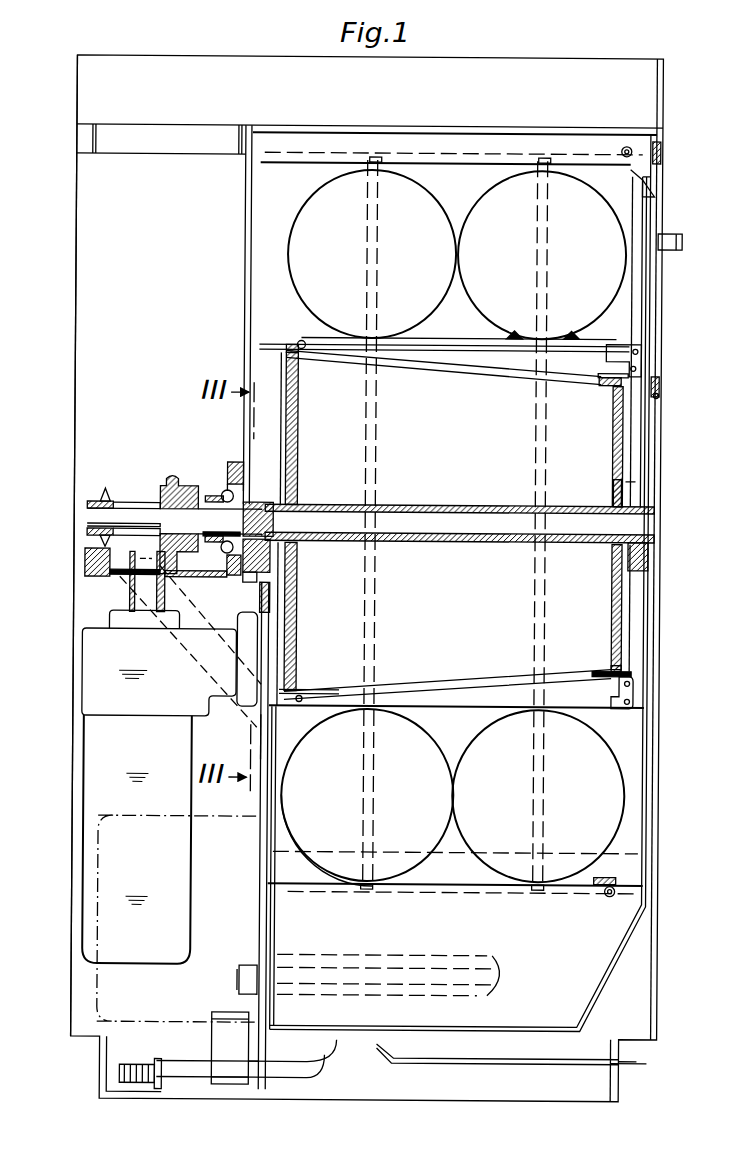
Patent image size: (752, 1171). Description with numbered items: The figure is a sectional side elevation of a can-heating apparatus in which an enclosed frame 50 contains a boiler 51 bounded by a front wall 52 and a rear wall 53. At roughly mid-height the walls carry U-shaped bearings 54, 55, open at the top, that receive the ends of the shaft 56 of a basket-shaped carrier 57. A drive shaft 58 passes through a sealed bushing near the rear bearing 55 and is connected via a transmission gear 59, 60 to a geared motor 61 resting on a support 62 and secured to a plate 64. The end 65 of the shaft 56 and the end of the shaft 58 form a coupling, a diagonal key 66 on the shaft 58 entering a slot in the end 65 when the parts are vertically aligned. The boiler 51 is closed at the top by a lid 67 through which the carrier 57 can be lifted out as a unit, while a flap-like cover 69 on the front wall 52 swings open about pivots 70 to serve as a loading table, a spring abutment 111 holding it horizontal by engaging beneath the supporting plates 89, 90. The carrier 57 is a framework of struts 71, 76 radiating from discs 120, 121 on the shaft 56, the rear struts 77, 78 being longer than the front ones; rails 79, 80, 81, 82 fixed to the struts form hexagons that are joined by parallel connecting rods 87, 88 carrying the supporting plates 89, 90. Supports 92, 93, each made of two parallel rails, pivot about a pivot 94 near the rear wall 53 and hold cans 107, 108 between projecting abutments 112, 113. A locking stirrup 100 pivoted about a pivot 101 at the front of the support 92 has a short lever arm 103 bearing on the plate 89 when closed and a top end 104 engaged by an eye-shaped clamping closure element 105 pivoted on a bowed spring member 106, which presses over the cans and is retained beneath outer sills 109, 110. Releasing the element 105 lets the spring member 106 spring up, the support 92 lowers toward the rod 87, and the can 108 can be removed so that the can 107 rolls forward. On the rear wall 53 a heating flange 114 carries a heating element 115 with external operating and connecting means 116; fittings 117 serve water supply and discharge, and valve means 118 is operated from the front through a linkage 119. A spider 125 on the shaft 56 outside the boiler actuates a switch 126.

The frame 50 is at (74, 195).
The boiler 51 is at (246, 329).
The front wall 52 is at (654, 586).
The rear wall 53 is at (258, 612).
The bearing 54 is at (648, 553).
The bearing 55 is at (243, 578).
The shaft 56 is at (508, 541).
The carrier 57 is at (592, 460).
The shaft 58 is at (217, 532).
The transmission gear 59 is at (165, 498).
The transmission gear 60 is at (85, 565).
The geared motor 61 is at (92, 752).
The support 62 is at (262, 830).
The plate 64 is at (262, 741).
The shaft end 65 is at (264, 503).
The diagonal key 66 is at (459, 523).
The lid 67 is at (505, 126).
The flap-like cover 69 is at (655, 322).
The pivots 70 is at (657, 394).
The strut 71 is at (622, 485).
The strut 76 is at (622, 622).
The strut 77 is at (297, 458).
The strut 78 is at (297, 628).
The rail 79 is at (606, 385).
The rail 80 is at (610, 668).
The rail 81 is at (285, 351).
The rail 82 is at (298, 690).
The connecting rod 87 is at (402, 362).
The connecting rod 88 is at (433, 684).
The supporting plate 89 is at (610, 345).
The supporting plate 90 is at (622, 690).
The support 92 is at (346, 350).
The support 93 is at (392, 688).
The pivot 94 is at (298, 340).
The locking stirrup 100 is at (645, 285).
The pivot 101 is at (637, 350).
The short lever arm 103 is at (635, 367).
The top end 104 is at (648, 195).
The clamping closure element 105 is at (658, 168).
The bowed spring member 106 is at (458, 163).
The can 107 is at (428, 252).
The can 108 is at (519, 252).
The outer sill 109 is at (373, 157).
The outer sill 110 is at (543, 157).
The spring abutment 111 is at (620, 400).
The projecting abutment 112 is at (513, 330).
The projecting abutment 113 is at (570, 330).
The heating flange 114 is at (272, 888).
The heating element 115 is at (500, 990).
The operating and connecting means 116 is at (100, 992).
The fittings 117 is at (322, 1078).
The valve means 118 is at (234, 1085).
The linkage 119 is at (555, 1065).
The disc 120 is at (297, 500).
The disc 121 is at (613, 495).
The spider 125 is at (105, 497).
The switch 126 is at (102, 542).